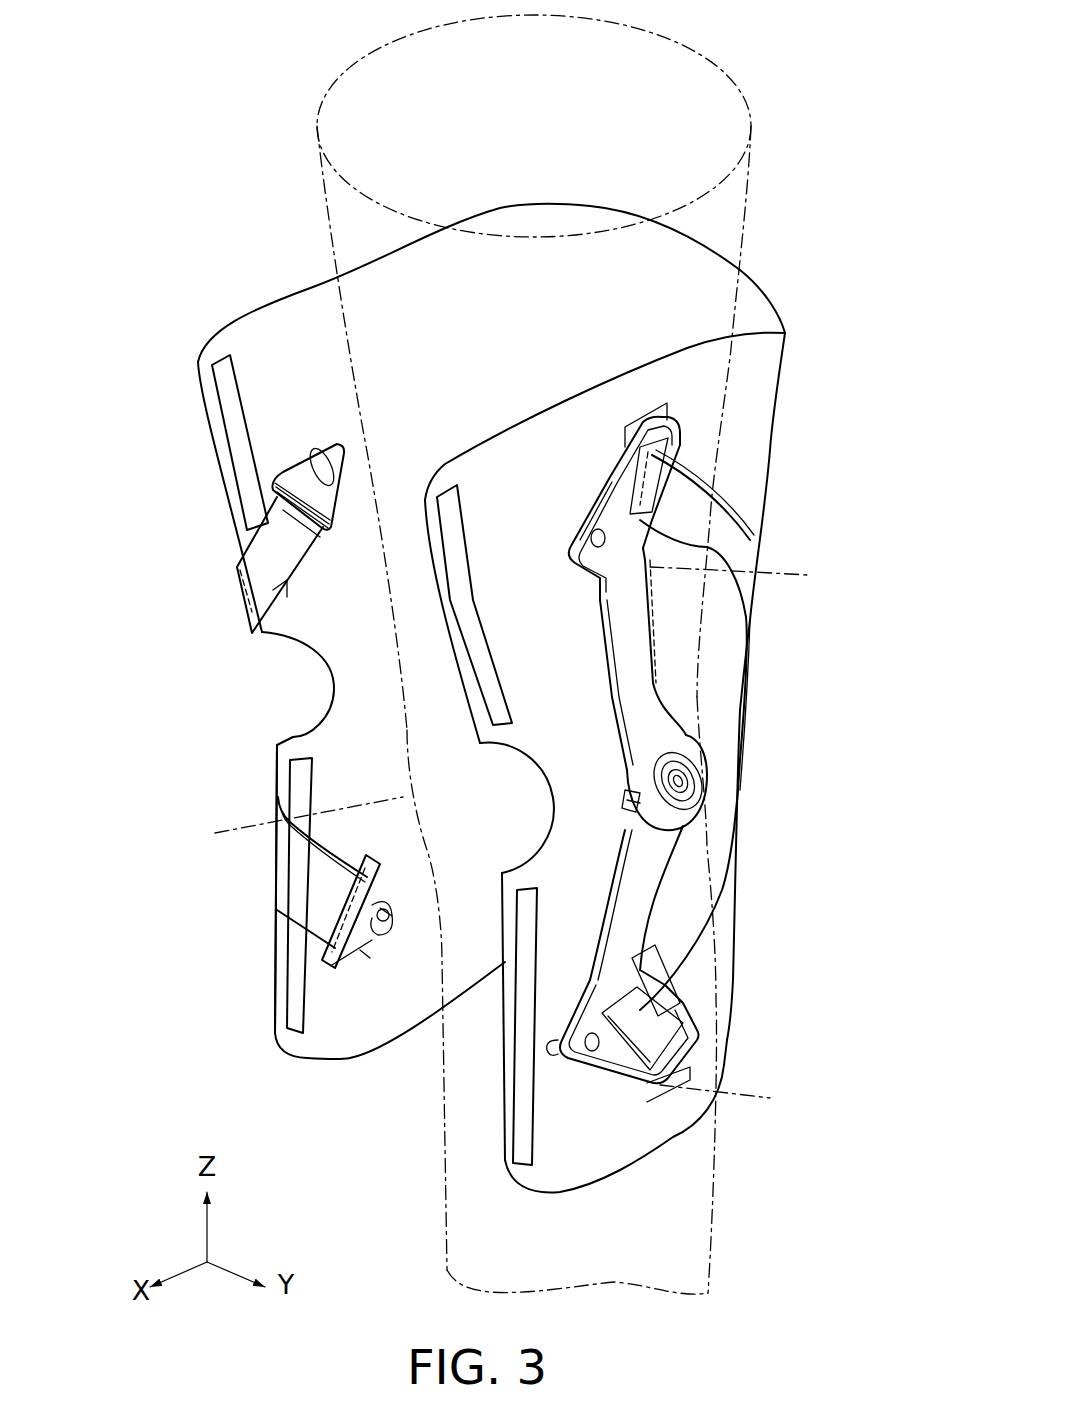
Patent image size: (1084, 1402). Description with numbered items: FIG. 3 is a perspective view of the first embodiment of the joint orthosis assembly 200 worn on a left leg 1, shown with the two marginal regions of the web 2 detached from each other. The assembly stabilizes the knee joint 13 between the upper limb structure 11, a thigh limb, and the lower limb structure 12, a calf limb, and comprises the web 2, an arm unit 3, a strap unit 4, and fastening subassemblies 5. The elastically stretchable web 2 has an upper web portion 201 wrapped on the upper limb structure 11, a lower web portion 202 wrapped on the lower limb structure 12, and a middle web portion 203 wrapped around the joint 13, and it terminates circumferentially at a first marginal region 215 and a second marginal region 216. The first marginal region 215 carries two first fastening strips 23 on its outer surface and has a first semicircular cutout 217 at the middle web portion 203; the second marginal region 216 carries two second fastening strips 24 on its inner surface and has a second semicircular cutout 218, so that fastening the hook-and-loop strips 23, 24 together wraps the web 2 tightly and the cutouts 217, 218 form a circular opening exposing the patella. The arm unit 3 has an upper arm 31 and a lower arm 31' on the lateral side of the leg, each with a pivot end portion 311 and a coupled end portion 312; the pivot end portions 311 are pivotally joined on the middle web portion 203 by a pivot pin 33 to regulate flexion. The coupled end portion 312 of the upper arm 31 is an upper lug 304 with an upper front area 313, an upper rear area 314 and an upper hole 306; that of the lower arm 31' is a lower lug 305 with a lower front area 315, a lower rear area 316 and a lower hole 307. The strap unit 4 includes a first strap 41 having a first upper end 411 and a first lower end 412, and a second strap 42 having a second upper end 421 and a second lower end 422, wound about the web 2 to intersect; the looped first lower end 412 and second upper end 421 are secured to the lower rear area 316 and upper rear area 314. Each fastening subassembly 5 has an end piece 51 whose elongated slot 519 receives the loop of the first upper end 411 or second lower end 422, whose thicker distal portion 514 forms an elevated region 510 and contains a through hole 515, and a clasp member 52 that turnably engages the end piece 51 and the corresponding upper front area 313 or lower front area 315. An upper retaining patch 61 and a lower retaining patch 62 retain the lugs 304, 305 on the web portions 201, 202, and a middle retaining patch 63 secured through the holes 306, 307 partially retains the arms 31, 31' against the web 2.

The left leg 1 is at (463, 654).
The upper limb structure 11 is at (327, 204).
The lower limb structure 12 is at (447, 1237).
The joint 13 is at (289, 823).
The web 2 is at (477, 716).
The joint orthosis assembly 200 is at (498, 716).
The upper web portion 201 is at (523, 538).
The lower web portion 202 is at (502, 965).
The middle web portion 203 is at (722, 767).
The first marginal region 215 is at (510, 1113).
The second marginal region 216 is at (287, 950).
The first semicircular cutout 217 is at (518, 852).
The second semicircular cutout 218 is at (290, 735).
The first fastening strips 23 is at (447, 480).
The second fastening strips 24 is at (213, 383).
The arm unit 3 is at (724, 775).
The upper arm 31 is at (722, 659).
The lower arm 31' is at (705, 903).
The pivot pin 33 is at (685, 783).
The upper lug 304 is at (690, 428).
The lower lug 305 is at (697, 1013).
The upper hole 306 is at (662, 447).
The lower hole 307 is at (673, 1040).
The pivot end portion 311 is at (647, 783).
The coupled end portion 312 is at (741, 738).
The upper front area 313 is at (613, 487).
The upper rear area 314 is at (707, 547).
The lower front area 315 is at (618, 1057).
The lower rear area 316 is at (687, 1023).
The strap unit 4 is at (478, 733).
The first strap 41 is at (260, 565).
The second strap 42 is at (267, 872).
The first upper end 411 is at (290, 540).
The first lower end 412 is at (665, 997).
The second upper end 421 is at (650, 490).
The second lower end 422 is at (333, 908).
The fastening subassembly 5 is at (287, 692).
The end piece 51 is at (300, 447).
The clasp member 52 is at (590, 512).
The elevated region 510 is at (387, 943).
The distal portion 514 is at (367, 945).
The through hole 515 is at (383, 903).
The elongated slot 519 is at (310, 500).
The upper retaining patch 61 is at (647, 413).
The lower retaining patch 62 is at (733, 1097).
The middle retaining patch 63 is at (744, 573).